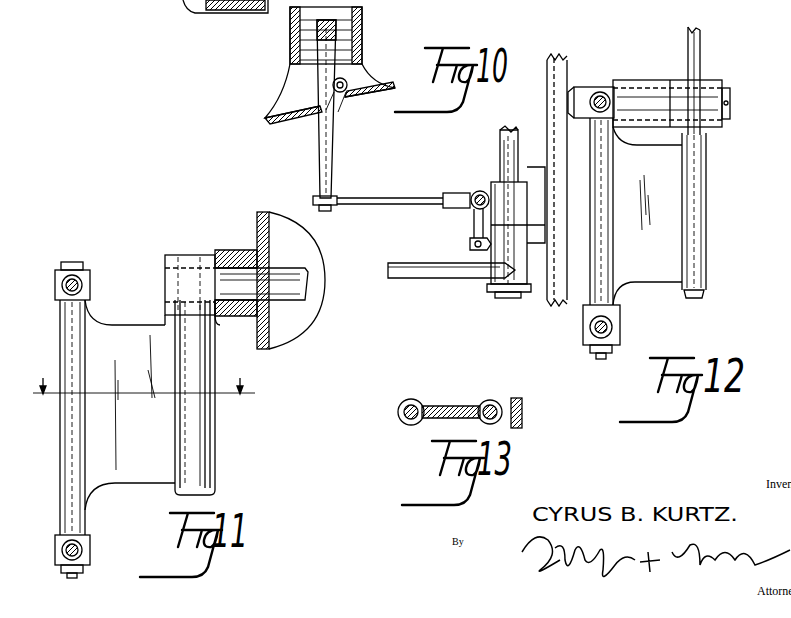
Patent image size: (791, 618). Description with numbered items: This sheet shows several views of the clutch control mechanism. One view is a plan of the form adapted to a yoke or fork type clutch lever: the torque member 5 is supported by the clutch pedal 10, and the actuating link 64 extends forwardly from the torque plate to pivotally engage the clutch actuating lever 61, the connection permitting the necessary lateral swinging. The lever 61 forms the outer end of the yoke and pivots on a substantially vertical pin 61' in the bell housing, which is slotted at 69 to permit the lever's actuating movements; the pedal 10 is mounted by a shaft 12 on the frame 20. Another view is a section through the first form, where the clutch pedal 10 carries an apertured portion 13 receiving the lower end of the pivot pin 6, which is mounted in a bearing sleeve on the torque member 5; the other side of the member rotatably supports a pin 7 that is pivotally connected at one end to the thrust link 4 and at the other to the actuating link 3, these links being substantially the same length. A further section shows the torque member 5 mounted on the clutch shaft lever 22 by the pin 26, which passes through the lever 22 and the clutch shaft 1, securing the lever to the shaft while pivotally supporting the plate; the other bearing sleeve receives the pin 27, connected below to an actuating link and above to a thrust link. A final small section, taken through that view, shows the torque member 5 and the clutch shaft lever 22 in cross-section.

In FIG. 11, the clutch shaft 1 is at (290, 300).
In FIG. 12, the actuating link 3 is at (612, 330).
In FIG. 12, the thrust link 4 is at (599, 87).
In FIG. 10, the torque member 5 is at (470, 224).
In FIG. 12, the torque member 5 is at (649, 212).
In FIG. 11, the torque member 5 is at (135, 402).
In FIG. 13, the torque member 5 is at (451, 406).
In FIG. 12, the pivot pin 6 is at (710, 228).
In FIG. 12, the pin 7 is at (589, 288).
In FIG. 10, the clutch pedal 10 is at (437, 270).
In FIG. 12, the clutch pedal 10 is at (697, 52).
In FIG. 10, the shaft 12 is at (502, 152).
In FIG. 11, the apertured portion 13 is at (142, 376).
In FIG. 10, the frame 20 is at (553, 105).
In FIG. 11, the clutch shaft lever 22 is at (215, 466).
In FIG. 13, the clutch shaft lever 22 is at (523, 400).
In FIG. 11, the pin 26 is at (205, 432).
In FIG. 11, the pin 27 is at (75, 455).
In FIG. 10, the clutch actuating lever 61 is at (309, 115).
In FIG. 10, the pin 61' is at (373, 62).
In FIG. 10, the actuating link 64 is at (390, 197).
In FIG. 10, the slot 69 is at (341, 100).